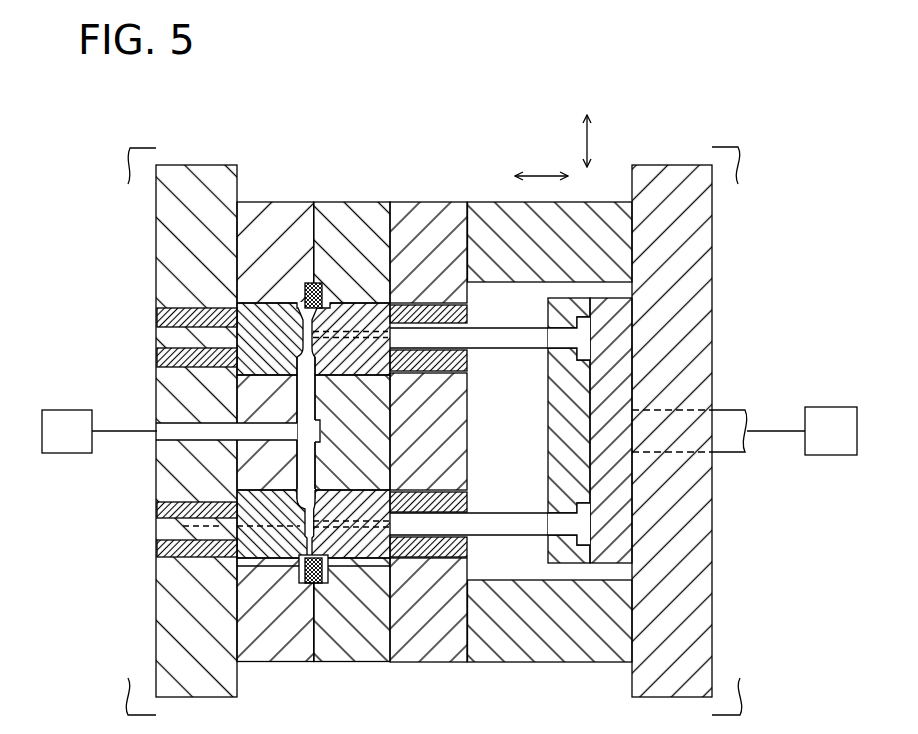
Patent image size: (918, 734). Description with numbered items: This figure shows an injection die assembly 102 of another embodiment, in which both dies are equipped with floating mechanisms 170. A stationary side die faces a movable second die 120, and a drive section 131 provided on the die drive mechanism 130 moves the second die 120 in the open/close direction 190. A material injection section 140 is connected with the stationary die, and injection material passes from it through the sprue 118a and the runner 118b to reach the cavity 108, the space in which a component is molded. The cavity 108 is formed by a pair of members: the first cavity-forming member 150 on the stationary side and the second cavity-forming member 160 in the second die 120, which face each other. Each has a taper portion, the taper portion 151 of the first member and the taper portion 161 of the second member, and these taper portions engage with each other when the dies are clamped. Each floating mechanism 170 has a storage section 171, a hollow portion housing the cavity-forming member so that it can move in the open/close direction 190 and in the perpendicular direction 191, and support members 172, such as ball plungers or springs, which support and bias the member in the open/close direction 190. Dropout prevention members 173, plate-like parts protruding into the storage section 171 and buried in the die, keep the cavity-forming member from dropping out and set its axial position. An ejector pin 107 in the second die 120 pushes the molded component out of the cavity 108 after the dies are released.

The injection die assembly 102 is at (653, 122).
The ejector pin 107 is at (368, 300).
The cavity 108 is at (280, 315).
The sprue 118a is at (200, 436).
The runner 118b is at (303, 466).
The second die 120 is at (488, 192).
The die drive mechanism 130 is at (761, 396).
The drive section 131 is at (828, 407).
The material injection section 140 is at (67, 410).
The first cavity-forming member 150 is at (258, 567).
The taper portion 151 is at (294, 568).
The second cavity-forming member 160 is at (368, 567).
The taper portion 161 is at (321, 583).
The floating mechanism 170 is at (335, 389).
The storage section 171 is at (342, 297).
The support member 172 is at (157, 318).
The dropout prevention member 173 is at (322, 283).
The open/close direction 190 is at (540, 176).
The perpendicular direction 191 is at (589, 140).